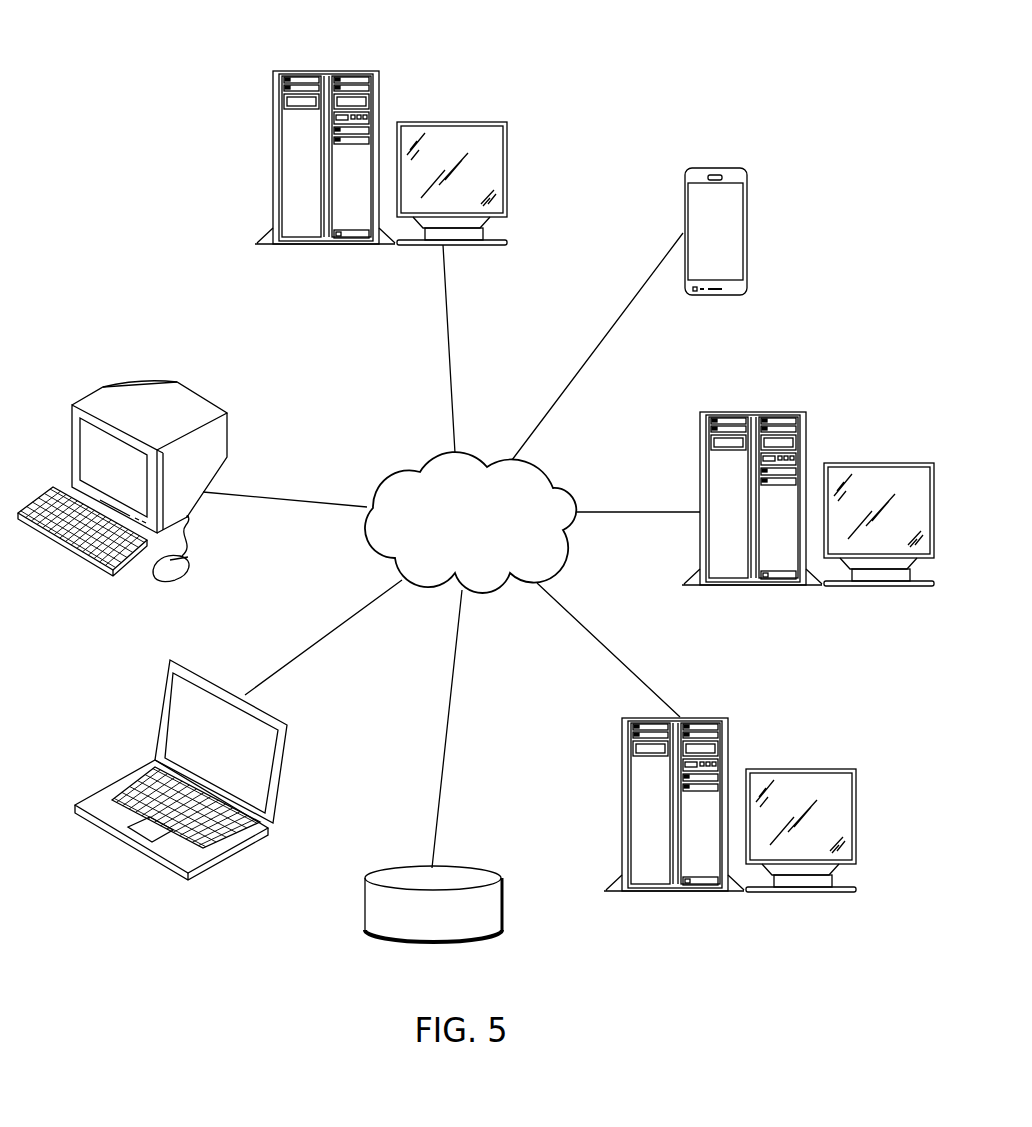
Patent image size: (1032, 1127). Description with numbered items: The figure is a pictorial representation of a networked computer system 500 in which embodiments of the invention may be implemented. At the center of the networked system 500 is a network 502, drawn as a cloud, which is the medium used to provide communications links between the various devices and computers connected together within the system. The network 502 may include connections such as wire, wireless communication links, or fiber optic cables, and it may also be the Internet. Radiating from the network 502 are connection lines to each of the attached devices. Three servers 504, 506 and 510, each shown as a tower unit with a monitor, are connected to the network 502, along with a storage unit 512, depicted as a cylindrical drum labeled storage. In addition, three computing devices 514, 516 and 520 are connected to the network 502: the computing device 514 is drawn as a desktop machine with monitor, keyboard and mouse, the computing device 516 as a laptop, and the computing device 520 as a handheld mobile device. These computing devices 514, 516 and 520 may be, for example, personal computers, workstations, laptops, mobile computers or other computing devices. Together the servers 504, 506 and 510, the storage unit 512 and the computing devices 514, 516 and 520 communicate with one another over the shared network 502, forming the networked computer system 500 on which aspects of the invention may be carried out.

The networked computer system 500 is at (832, 43).
The network 502 is at (450, 549).
The server 504 is at (327, 70).
The server 506 is at (775, 410).
The server 510 is at (712, 717).
The storage unit 512 is at (475, 868).
The computing device 514 is at (135, 388).
The computing device 516 is at (168, 697).
The computing device 520 is at (712, 167).